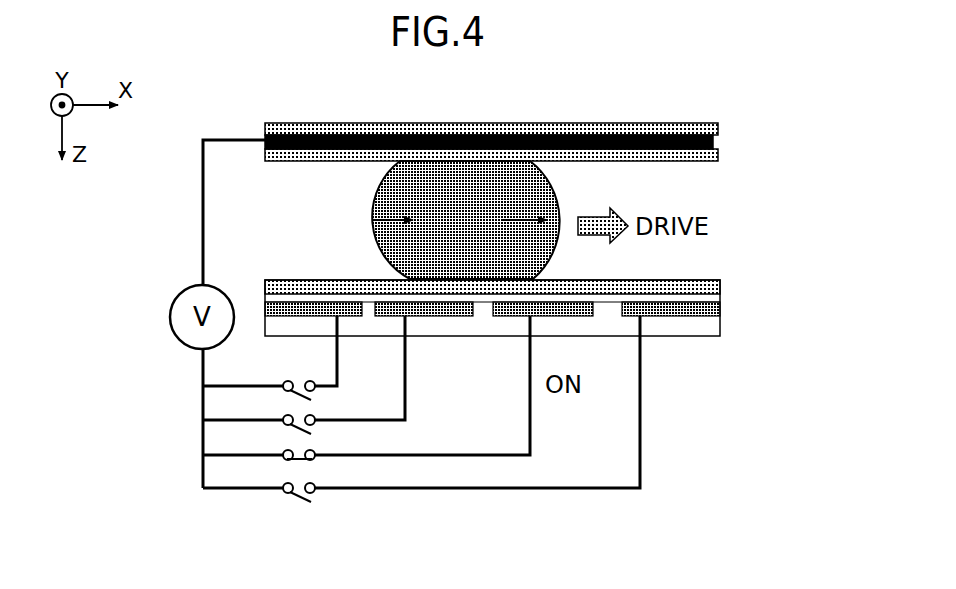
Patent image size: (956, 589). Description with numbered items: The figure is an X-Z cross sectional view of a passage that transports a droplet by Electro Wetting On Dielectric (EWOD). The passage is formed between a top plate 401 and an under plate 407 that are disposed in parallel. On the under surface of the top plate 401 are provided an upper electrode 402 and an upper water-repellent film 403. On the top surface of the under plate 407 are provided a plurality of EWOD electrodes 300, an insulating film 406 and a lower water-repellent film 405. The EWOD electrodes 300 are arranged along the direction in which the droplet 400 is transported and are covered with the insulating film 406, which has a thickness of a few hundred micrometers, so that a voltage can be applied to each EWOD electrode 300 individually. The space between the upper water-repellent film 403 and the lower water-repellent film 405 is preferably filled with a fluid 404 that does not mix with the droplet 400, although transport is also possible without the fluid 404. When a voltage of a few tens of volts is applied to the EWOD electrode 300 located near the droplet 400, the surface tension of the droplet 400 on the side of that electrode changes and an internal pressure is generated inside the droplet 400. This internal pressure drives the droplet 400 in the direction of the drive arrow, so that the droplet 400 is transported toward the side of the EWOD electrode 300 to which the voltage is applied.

The droplet 400 is at (396, 186).
The top plate 401 is at (662, 132).
The upper electrode 402 is at (713, 140).
The upper water-repellent film 403 is at (713, 157).
The fluid 404 is at (648, 187).
The lower water-repellent film 405 is at (707, 285).
The insulating film 406 is at (713, 298).
The EWOD electrode 300 is at (710, 315).
The under plate 407 is at (713, 337).